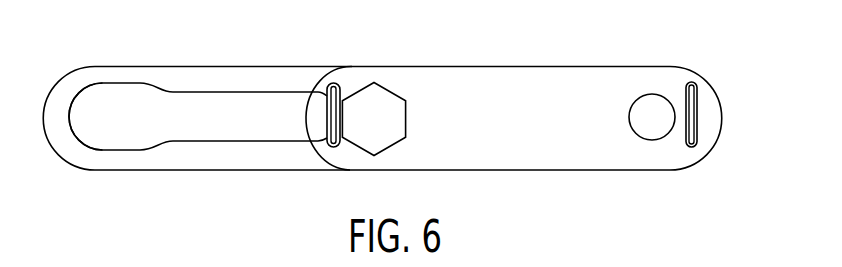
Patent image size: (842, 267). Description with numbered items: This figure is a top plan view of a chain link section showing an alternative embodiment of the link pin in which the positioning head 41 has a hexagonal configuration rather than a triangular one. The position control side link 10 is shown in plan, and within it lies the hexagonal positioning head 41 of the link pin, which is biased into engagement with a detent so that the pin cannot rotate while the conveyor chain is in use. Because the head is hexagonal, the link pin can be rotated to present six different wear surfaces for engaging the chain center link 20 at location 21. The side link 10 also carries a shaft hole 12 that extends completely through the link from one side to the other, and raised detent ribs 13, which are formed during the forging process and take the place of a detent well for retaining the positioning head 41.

The position control side link 10 is at (507, 62).
The shaft hole 12 is at (653, 102).
The detent rib 13 is at (327, 93).
The chain center link 20 is at (162, 62).
The engagement location on center link 21 is at (91, 98).
The positioning head 41 is at (383, 98).